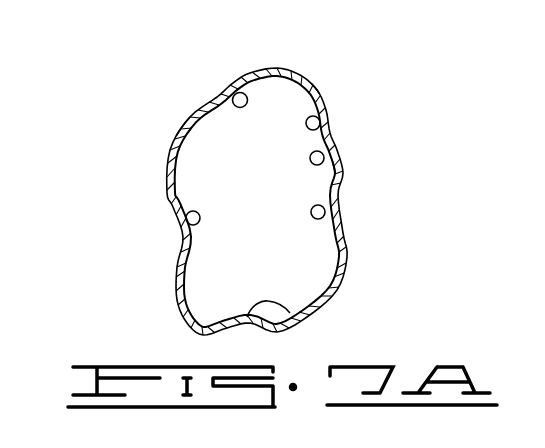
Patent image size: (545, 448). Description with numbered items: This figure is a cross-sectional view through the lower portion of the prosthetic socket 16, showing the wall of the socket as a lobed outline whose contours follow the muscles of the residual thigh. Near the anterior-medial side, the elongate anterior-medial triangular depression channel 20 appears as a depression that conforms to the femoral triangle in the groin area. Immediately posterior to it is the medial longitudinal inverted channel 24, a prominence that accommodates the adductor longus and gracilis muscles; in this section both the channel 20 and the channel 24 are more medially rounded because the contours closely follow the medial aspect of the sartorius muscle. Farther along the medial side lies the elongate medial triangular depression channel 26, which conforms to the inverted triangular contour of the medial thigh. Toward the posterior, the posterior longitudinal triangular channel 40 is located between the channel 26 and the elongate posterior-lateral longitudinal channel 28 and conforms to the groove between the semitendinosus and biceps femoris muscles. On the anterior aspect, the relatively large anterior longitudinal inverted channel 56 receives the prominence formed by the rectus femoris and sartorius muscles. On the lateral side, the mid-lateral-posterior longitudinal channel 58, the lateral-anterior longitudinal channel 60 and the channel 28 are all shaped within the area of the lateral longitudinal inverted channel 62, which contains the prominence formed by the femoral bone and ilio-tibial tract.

The socket 16 is at (262, 58).
The elongate anterior-medial triangular depression channel 20 is at (227, 92).
The medial longitudinal inverted channel 24 is at (180, 118).
The elongate medial triangular depression channel 26 is at (173, 212).
The elongate posterior-lateral longitudinal channel 28 is at (335, 216).
The posterior longitudinal triangular channel 40 is at (300, 315).
The anterior longitudinal inverted channel 56 is at (320, 88).
The mid-lateral-posterior longitudinal channel 58 is at (335, 128).
The lateral-anterior longitudinal channel 60 is at (338, 153).
The lateral longitudinal inverted channel 62 is at (337, 167).